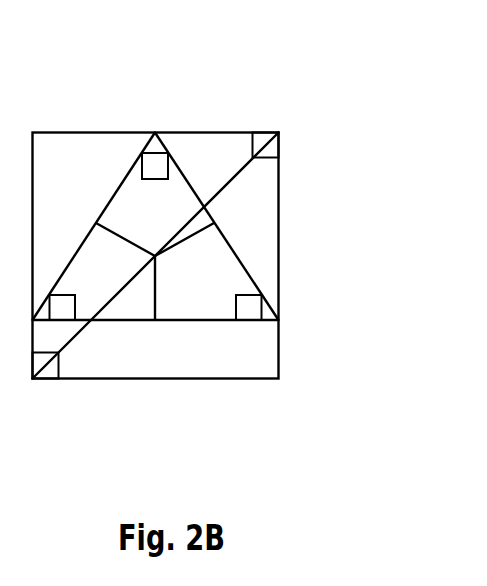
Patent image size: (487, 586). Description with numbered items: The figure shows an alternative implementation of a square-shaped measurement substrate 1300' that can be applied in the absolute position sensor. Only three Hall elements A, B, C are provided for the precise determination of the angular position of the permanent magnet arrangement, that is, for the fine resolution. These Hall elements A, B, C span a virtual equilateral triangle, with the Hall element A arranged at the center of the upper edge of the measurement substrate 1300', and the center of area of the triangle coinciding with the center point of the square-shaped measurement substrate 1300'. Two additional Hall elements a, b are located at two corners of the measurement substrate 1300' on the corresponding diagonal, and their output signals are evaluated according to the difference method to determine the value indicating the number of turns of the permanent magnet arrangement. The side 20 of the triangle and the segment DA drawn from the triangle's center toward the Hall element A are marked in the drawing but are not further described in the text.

The measurement substrate 1300' is at (161, 193).
The side AB of triangle 20 is at (232, 243).
The segment from center point D DA is at (155, 256).
The Hall element A is at (155, 116).
The Hall element B is at (287, 311).
The Hall element C is at (21, 316).
The additional Hall element a is at (288, 148).
The additional Hall element b is at (21, 383).